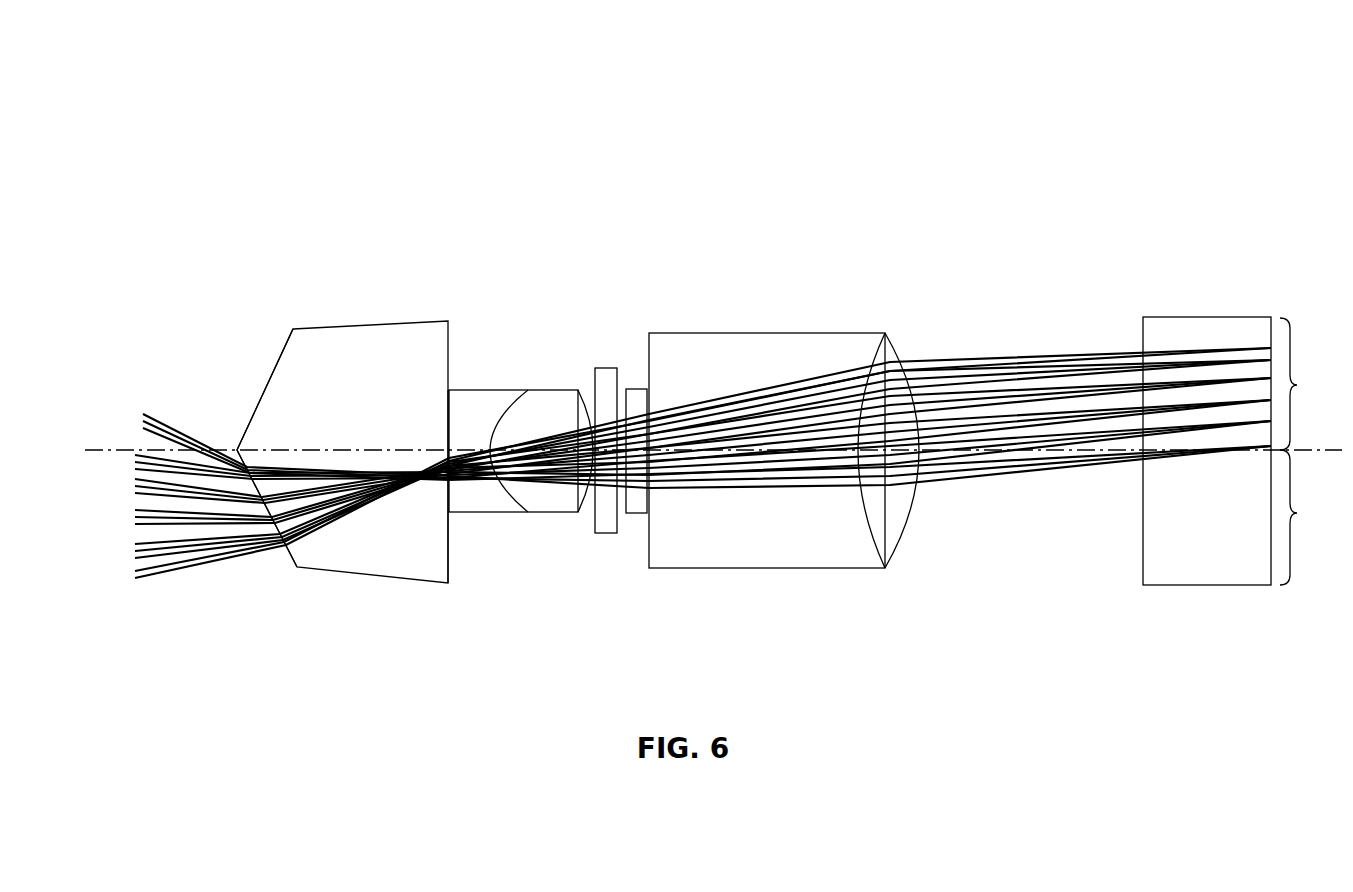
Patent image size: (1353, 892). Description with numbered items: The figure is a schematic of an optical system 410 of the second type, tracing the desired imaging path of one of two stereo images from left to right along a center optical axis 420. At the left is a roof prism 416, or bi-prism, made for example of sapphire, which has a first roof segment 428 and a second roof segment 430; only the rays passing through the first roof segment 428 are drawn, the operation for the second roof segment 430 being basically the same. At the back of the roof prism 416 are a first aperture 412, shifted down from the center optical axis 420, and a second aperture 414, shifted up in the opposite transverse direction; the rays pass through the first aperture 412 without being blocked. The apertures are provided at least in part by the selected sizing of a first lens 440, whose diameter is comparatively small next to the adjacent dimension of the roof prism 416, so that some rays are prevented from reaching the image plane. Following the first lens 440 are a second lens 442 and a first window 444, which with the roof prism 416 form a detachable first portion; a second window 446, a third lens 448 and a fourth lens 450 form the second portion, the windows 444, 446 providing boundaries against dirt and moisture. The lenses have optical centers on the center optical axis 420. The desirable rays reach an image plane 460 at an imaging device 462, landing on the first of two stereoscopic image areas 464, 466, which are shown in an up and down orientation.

The optical system 410 is at (216, 140).
The first aperture 412 is at (450, 498).
The second aperture 414 is at (450, 413).
The roof prism 416 is at (370, 335).
The center optical axis 420 is at (98, 448).
The first roof segment 428 is at (285, 552).
The second roof segment 430 is at (253, 405).
The first lens 440 is at (495, 410).
The second lens 442 is at (547, 400).
The first window 444 is at (610, 517).
The second window 446 is at (633, 508).
The third lens 448 is at (727, 345).
The fourth lens 450 is at (888, 357).
The image plane 460 is at (1275, 310).
The imaging device 462 is at (1207, 328).
The first stereoscopic image area 464 is at (1311, 384).
The second stereoscopic image area 466 is at (1311, 517).